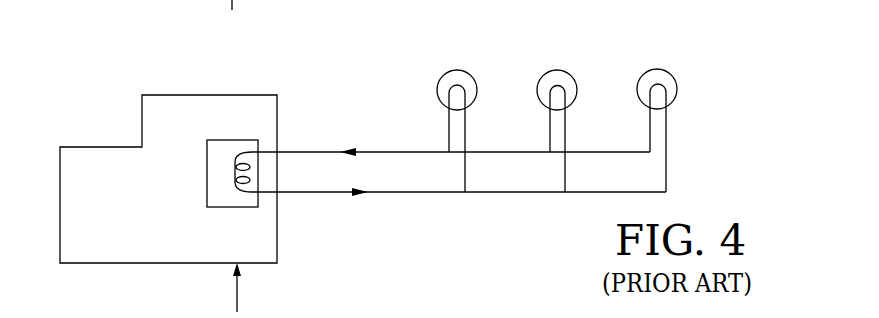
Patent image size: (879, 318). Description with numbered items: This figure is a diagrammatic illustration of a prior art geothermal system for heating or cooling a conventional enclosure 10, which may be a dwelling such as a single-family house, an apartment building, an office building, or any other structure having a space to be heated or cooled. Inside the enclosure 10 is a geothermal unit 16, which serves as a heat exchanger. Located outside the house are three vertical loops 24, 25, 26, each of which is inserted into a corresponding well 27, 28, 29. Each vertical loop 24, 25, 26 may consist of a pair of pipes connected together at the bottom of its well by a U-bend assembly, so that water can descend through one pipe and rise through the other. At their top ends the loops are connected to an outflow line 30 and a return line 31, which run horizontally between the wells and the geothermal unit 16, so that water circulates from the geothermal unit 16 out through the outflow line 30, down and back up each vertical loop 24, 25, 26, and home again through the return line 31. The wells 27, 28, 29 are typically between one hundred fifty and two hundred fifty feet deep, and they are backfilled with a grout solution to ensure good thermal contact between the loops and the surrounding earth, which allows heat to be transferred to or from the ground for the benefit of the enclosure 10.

The enclosure 10 is at (168, 140).
The geothermal unit 16 is at (232, 140).
The vertical loop 24 is at (462, 80).
The vertical loop 25 is at (552, 80).
The vertical loop 26 is at (663, 78).
The well 27 is at (438, 88).
The well 28 is at (537, 90).
The well 29 is at (640, 77).
The outflow line 30 is at (368, 150).
The return line 31 is at (385, 193).